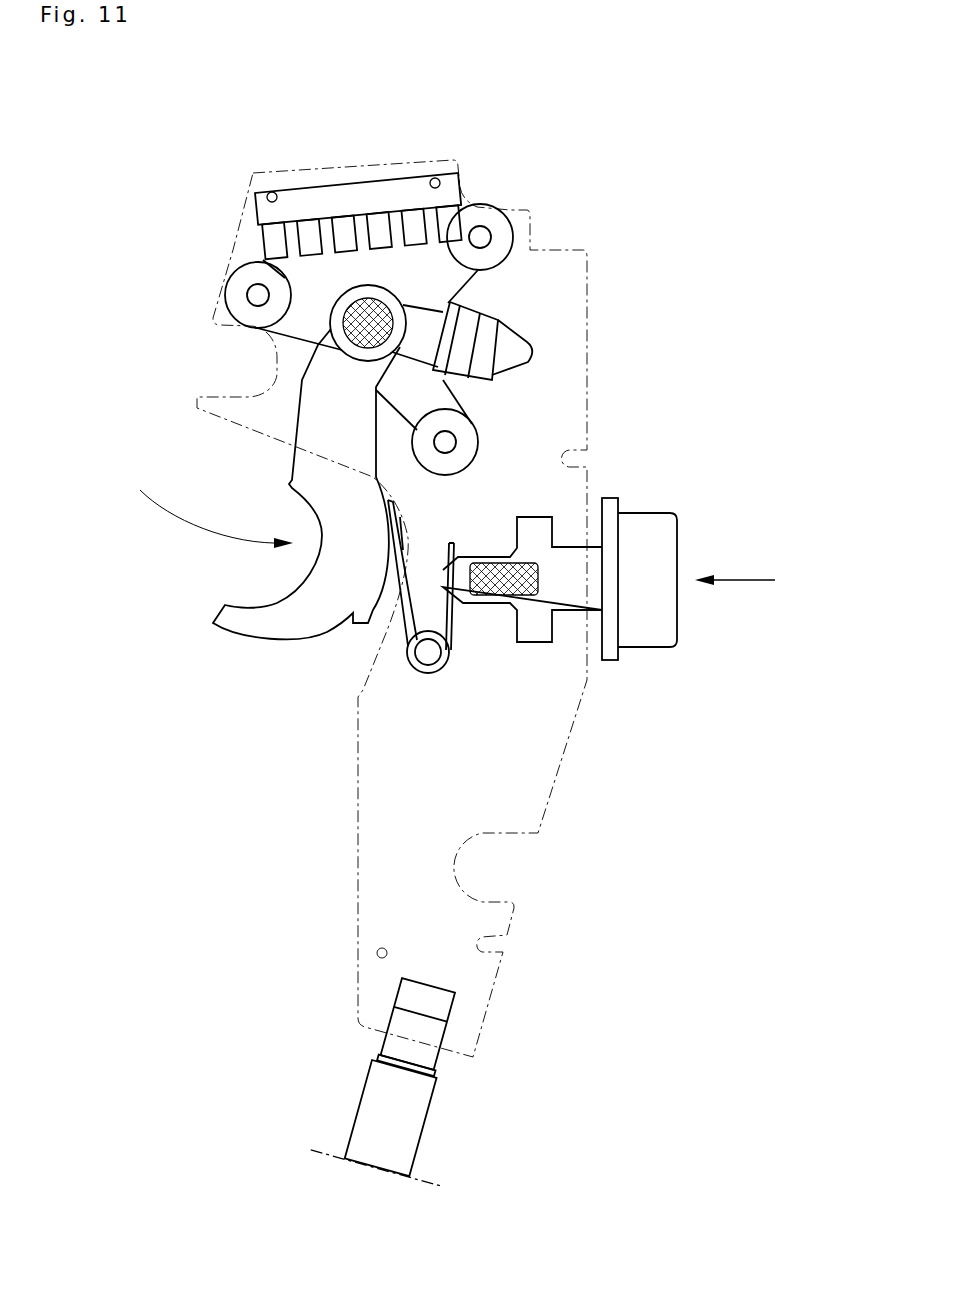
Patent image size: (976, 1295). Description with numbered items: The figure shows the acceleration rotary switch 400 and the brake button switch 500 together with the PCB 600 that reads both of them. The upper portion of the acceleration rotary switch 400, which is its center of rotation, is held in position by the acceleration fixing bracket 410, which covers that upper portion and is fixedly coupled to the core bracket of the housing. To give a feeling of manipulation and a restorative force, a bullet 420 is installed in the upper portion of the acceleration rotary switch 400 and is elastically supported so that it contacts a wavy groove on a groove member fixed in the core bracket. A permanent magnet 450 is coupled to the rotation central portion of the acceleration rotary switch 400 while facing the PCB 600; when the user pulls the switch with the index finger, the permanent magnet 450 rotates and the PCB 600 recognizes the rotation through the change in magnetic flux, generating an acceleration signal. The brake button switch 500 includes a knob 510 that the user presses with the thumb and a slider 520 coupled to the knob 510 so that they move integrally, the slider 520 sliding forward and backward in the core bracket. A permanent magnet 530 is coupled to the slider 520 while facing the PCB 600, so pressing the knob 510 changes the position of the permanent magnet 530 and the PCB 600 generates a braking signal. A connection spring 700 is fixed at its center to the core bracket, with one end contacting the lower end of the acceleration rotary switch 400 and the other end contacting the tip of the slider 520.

The acceleration rotary switch 400 is at (323, 587).
The acceleration fixing bracket 410 is at (410, 277).
The bullet 420 is at (510, 352).
The permanent magnet 450 is at (325, 340).
The brake button switch 500 is at (630, 616).
The knob 510 is at (663, 533).
The slider 520 is at (570, 595).
The permanent magnet 530 is at (488, 588).
The PCB 600 is at (360, 845).
The connection spring 700 is at (408, 648).